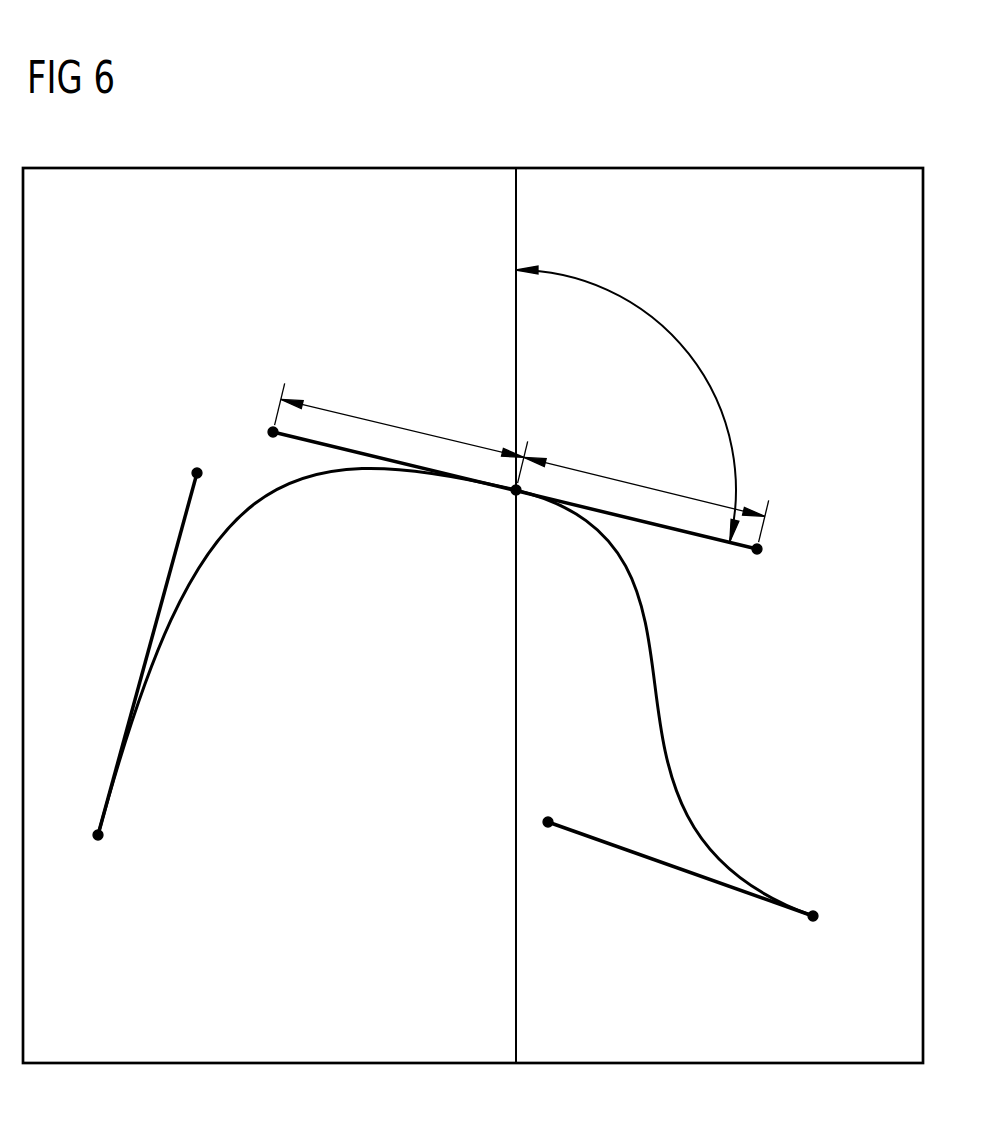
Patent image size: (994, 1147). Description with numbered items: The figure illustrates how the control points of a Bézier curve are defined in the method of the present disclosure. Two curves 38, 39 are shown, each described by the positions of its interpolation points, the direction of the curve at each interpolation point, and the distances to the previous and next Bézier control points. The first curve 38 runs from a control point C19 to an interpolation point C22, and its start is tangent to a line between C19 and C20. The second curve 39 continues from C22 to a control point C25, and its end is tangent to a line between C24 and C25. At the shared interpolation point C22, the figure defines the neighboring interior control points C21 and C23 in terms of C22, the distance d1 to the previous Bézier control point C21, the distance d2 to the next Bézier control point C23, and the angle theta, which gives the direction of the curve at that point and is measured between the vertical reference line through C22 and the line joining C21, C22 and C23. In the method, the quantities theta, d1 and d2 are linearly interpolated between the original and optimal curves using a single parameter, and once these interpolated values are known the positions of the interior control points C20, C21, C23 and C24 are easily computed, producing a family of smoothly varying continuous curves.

The control point C19 is at (98, 853).
The interior control point C20 is at (199, 458).
The interior control point C21 is at (250, 432).
The interpolation point C22 is at (495, 506).
The interior control point C23 is at (756, 568).
The interior control point C24 is at (551, 806).
The control point C25 is at (812, 935).
The curve 38 is at (218, 542).
The curve 39 is at (658, 685).
The distance to the previous Bézier control point d1 is at (401, 433).
The distance to the next Bézier control point d2 is at (646, 497).
The direction of the curve at the interpolation point theta is at (632, 404).